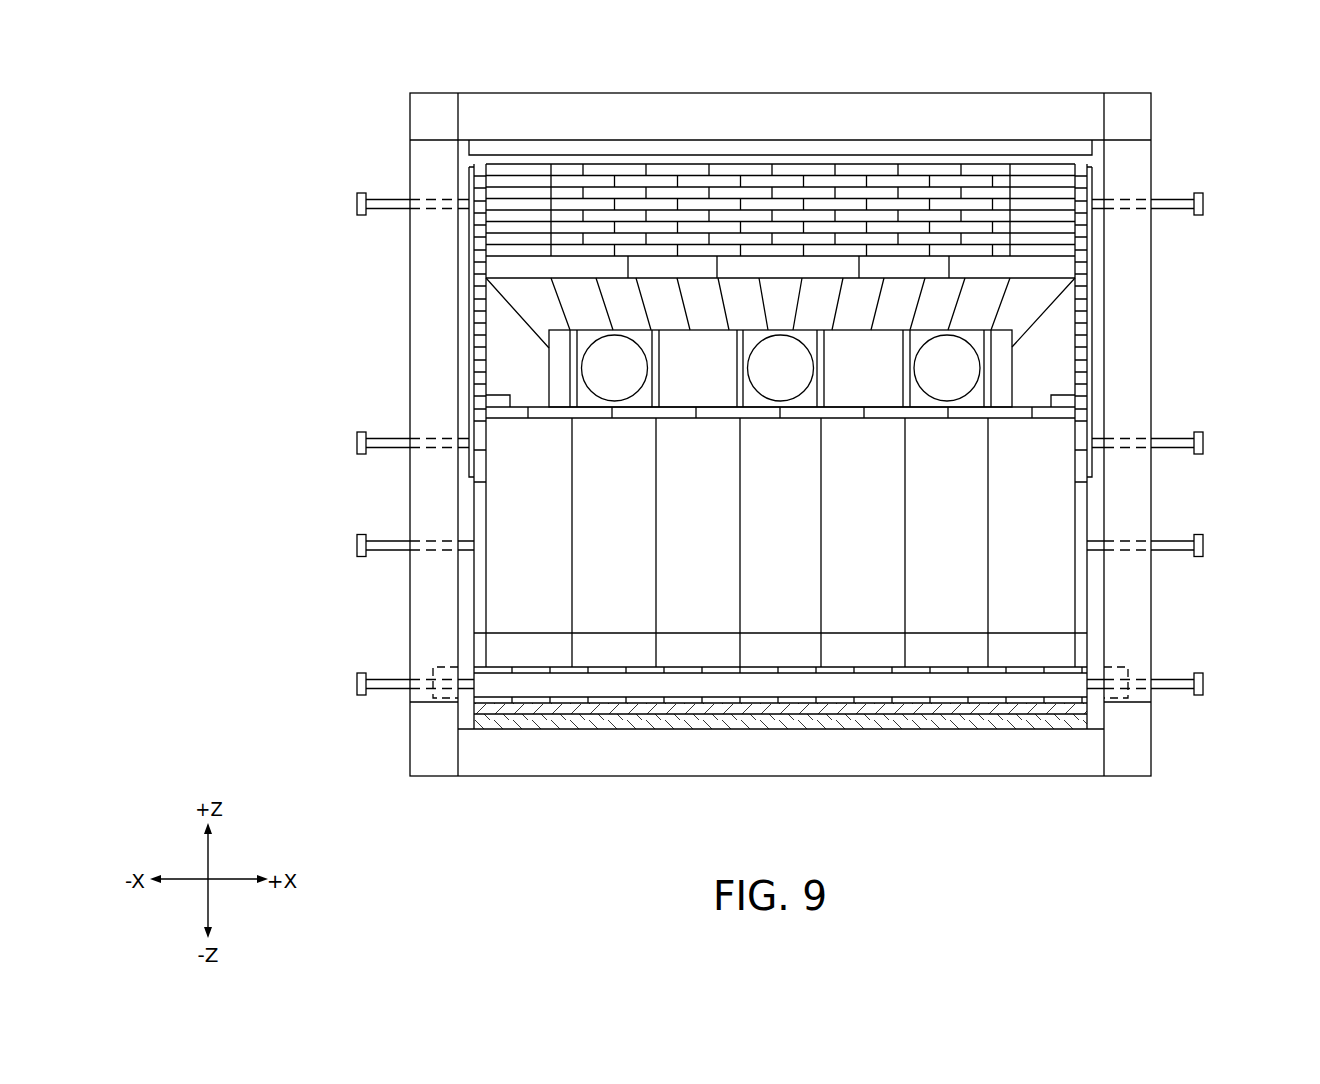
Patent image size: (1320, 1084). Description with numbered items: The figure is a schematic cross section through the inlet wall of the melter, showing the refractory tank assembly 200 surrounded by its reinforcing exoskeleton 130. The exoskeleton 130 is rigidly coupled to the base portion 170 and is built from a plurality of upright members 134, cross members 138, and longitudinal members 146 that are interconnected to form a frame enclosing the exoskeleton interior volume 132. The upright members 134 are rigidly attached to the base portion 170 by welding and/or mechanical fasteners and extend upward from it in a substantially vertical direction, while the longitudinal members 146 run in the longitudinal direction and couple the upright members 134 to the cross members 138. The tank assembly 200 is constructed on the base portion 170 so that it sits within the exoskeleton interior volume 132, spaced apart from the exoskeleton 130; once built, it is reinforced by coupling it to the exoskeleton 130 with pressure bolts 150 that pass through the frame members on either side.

The exoskeleton 130 is at (1170, 117).
The exoskeleton interior volume 132 is at (1104, 258).
The upright members 134 is at (409, 341).
The cross members 138 is at (637, 93).
The longitudinal members 146 is at (409, 110).
The pressure bolts 150 is at (1204, 203).
The base portion 170 is at (380, 754).
The tank assembly 200 is at (868, 150).